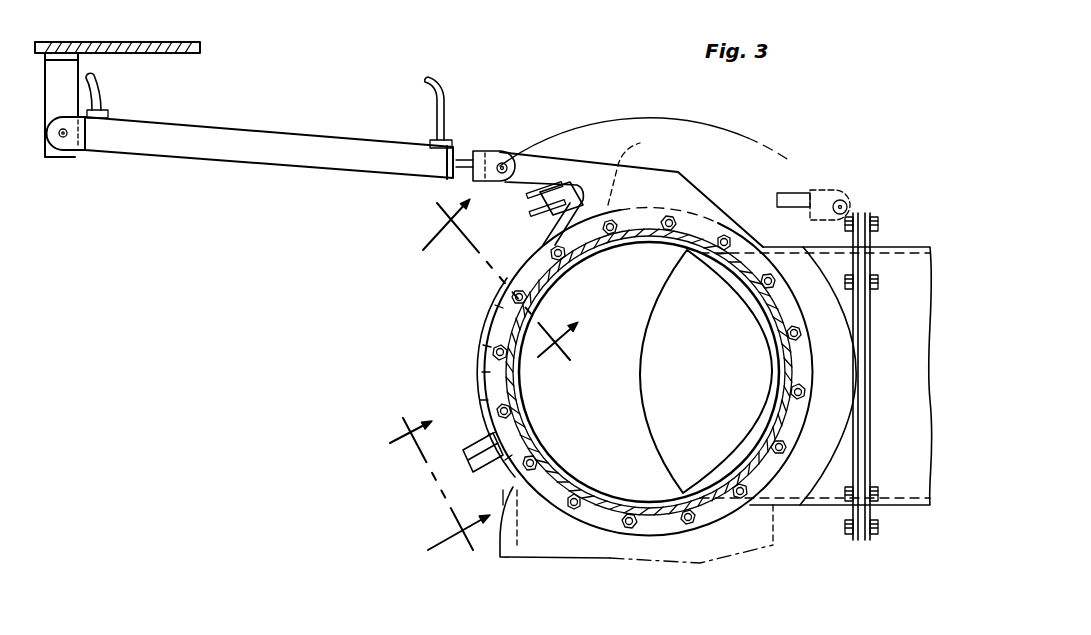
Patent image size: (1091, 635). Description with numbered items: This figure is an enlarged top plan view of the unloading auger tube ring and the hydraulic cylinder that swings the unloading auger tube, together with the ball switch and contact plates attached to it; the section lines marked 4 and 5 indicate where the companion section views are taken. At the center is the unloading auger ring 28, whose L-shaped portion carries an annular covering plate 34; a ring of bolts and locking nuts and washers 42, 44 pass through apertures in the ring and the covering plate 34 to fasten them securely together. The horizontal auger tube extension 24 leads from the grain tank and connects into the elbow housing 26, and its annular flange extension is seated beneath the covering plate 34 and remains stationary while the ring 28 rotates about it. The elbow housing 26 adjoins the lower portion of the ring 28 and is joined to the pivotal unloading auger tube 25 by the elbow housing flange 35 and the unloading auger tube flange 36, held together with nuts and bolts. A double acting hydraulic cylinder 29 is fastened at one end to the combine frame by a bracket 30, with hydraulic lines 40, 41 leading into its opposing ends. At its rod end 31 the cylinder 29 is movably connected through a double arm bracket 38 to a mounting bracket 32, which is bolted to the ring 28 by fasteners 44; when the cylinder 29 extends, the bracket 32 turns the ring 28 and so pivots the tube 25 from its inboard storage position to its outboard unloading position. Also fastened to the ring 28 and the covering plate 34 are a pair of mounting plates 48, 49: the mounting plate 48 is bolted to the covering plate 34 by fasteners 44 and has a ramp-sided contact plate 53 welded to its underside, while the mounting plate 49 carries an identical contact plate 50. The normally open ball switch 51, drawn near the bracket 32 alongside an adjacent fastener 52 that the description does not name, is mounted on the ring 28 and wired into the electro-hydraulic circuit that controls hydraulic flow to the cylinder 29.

The horizontal auger tube extension 24 is at (614, 257).
The unloading auger tube 25 is at (590, 563).
The elbow housing 26 is at (790, 508).
The unloading auger ring 28 is at (458, 375).
The double acting hydraulic cylinder 29 is at (213, 162).
The bracket 30 is at (50, 160).
The rod end 31 is at (470, 150).
The mounting bracket 32 is at (697, 177).
The annular covering plate 34 is at (490, 363).
The elbow housing flange 35 is at (850, 540).
The unloading auger tube flange 36 is at (868, 540).
The double arm bracket 38 is at (506, 160).
The hydraulic line 40 is at (105, 90).
The hydraulic line 41 is at (436, 103).
The bolts and locking nuts and washers 42 is at (505, 308).
The bolts and locking nuts and washers 44 is at (725, 232).
The mounting plate 48 is at (507, 500).
The mounting plate 49 is at (638, 167).
The contact plate 50 is at (555, 231).
The ball switch 51 is at (572, 196).
The bolt 52 is at (527, 194).
The contact plate 53 is at (497, 470).
The section line 4- 4 is at (499, 293).
The section line 5- 5 is at (417, 491).